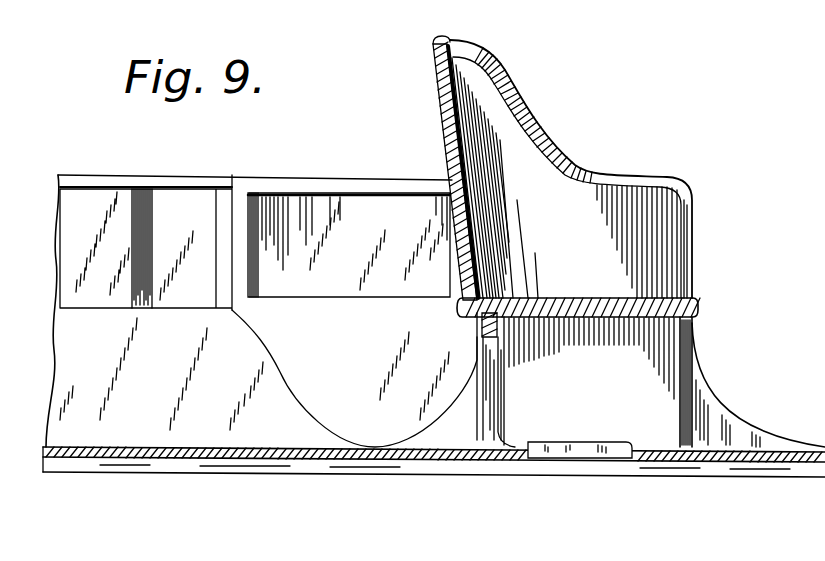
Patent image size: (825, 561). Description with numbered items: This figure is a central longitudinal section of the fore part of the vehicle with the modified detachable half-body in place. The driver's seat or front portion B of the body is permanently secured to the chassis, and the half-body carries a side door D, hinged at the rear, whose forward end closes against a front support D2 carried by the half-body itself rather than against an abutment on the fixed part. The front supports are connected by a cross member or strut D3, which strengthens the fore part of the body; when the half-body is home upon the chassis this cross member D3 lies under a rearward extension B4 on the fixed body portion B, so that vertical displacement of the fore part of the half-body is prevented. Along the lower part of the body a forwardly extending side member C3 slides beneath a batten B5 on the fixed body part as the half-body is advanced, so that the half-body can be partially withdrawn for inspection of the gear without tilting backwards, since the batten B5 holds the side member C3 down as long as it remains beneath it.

The side door D is at (337, 220).
The front support D2 is at (488, 430).
The cross member D3 is at (482, 325).
The front portion of the body B is at (602, 350).
The rearward extension B4 is at (493, 300).
The batten B5 is at (583, 444).
The forwardly extending side member C3 is at (530, 463).